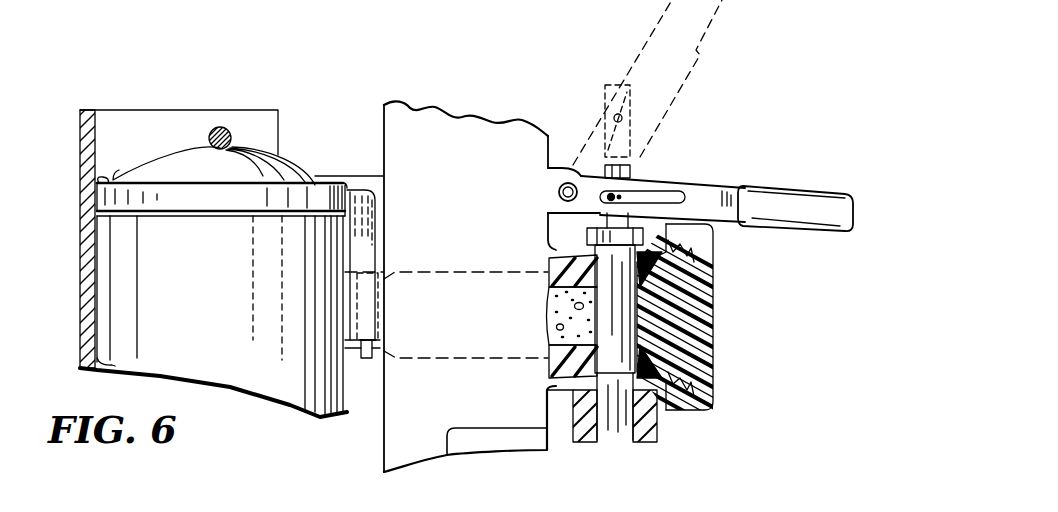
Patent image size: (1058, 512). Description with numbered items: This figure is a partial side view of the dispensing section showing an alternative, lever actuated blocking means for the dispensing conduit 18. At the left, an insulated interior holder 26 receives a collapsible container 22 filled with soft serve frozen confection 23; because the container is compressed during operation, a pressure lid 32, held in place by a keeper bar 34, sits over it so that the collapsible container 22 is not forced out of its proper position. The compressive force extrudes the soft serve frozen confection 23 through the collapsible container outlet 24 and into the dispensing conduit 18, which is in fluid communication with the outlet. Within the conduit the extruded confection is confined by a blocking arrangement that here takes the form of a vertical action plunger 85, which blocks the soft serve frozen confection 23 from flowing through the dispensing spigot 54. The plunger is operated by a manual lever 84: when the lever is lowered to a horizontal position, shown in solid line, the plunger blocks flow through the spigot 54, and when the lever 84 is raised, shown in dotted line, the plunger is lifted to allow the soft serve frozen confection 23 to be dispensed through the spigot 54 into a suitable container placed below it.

The dispensing conduit 18 is at (444, 286).
The collapsible container 22 is at (93, 295).
The soft serve frozen confection 23 is at (552, 332).
The collapsible container outlet 24 is at (368, 358).
The insulated interior holder 26 is at (89, 179).
The pressure lid 32 is at (142, 171).
The keeper bar 34 is at (220, 126).
The dispensing spigot 54 is at (632, 425).
The manual lever 84 is at (700, 32).
The vertical action plunger 85 is at (617, 327).